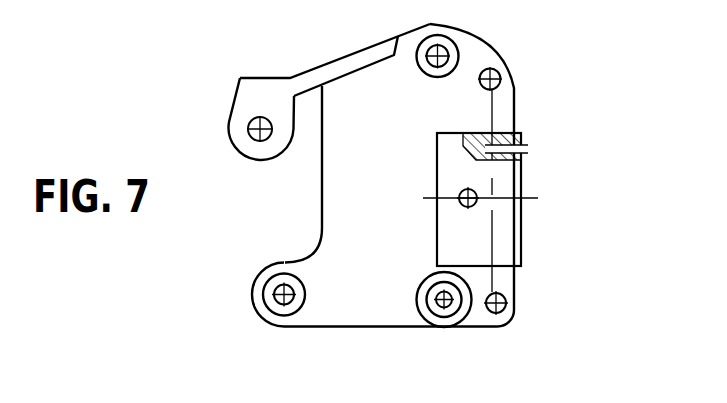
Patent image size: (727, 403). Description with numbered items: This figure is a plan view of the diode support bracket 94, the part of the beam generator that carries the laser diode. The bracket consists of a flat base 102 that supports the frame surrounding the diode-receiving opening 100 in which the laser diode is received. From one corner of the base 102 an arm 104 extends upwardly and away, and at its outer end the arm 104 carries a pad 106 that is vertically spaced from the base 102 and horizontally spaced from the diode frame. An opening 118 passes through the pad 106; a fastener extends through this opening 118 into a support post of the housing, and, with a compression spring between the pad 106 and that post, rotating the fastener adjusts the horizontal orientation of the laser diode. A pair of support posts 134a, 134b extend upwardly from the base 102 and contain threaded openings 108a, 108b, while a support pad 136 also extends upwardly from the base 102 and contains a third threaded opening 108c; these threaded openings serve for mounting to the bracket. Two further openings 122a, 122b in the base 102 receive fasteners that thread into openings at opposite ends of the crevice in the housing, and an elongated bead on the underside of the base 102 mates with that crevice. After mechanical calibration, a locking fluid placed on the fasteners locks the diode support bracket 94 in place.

The diode support bracket 94 is at (321, 168).
The diode-receiving opening 100 is at (284, 4).
The base 102 is at (312, 328).
The arm 104 is at (345, 58).
The pad 106 is at (237, 83).
The opening 118 is at (248, 124).
The support post 134a is at (267, 283).
The support post 134b is at (450, 33).
The support pad 136 is at (425, 327).
The threaded opening 108a is at (277, 302).
The threaded opening 108b is at (452, 53).
The threaded opening 108c is at (450, 309).
The opening 122a is at (501, 83).
The opening 122b is at (506, 297).